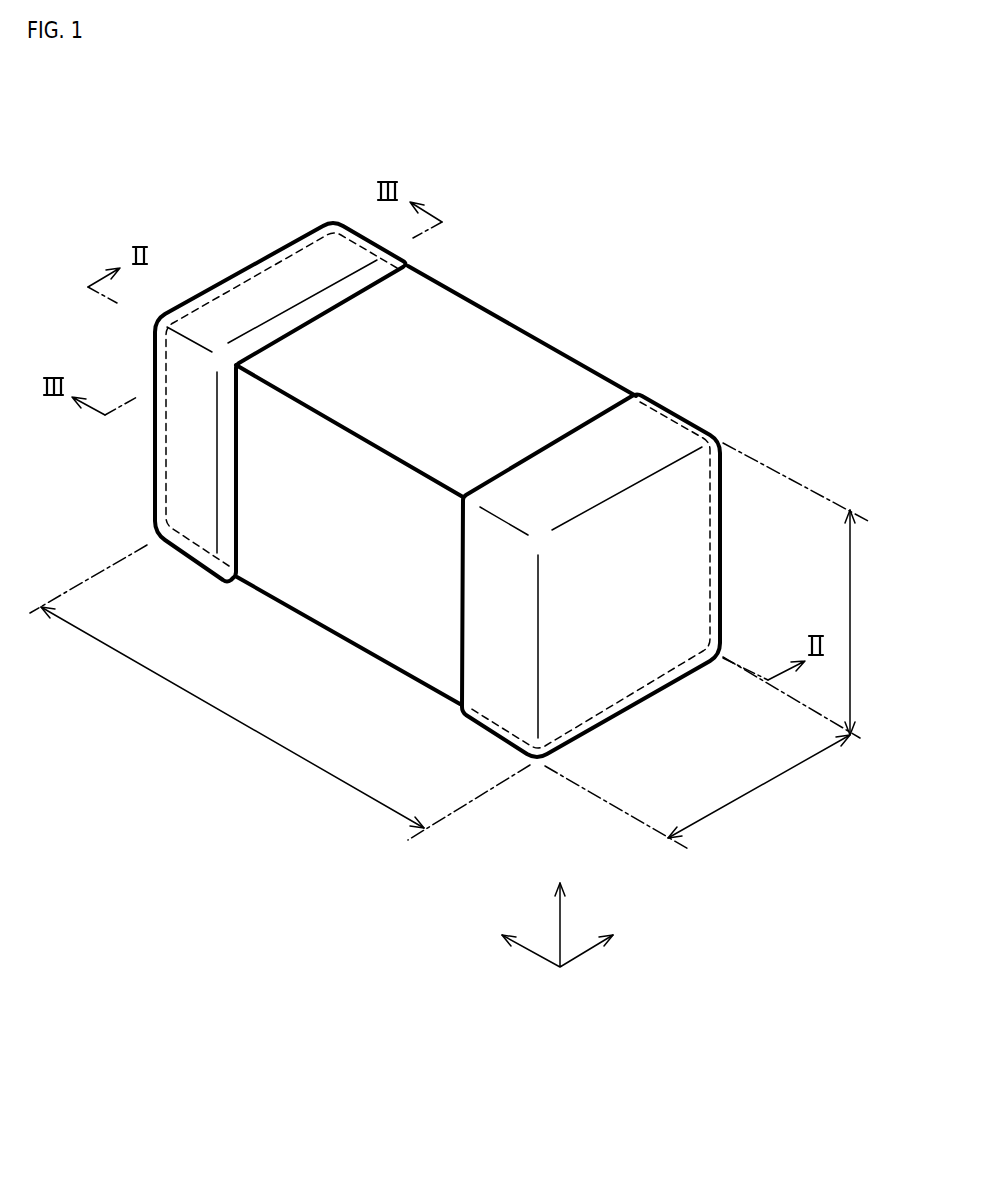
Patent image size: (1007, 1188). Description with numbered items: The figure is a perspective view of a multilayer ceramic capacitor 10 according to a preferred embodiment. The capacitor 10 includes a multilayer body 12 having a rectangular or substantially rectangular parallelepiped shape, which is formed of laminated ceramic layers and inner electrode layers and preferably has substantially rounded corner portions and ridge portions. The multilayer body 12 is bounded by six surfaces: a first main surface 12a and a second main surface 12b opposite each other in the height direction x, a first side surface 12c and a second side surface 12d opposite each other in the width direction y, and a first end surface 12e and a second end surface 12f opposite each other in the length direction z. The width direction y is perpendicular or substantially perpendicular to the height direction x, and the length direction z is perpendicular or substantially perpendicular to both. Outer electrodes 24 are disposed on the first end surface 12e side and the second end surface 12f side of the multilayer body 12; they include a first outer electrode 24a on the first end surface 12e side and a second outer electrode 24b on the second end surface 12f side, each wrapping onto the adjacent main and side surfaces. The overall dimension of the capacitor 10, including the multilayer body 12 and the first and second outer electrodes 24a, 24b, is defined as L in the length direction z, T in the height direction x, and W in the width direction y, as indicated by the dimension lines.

The multilayer ceramic capacitor 10 is at (92, 187).
The multilayer body 12 is at (582, 355).
The first main surface 12a is at (517, 360).
The second main surface 12b is at (315, 603).
The first side surface 12c is at (383, 627).
The second side surface 12d is at (472, 337).
The first end surface 12e is at (265, 282).
The second end surface 12f is at (673, 535).
The outer electrodes 24 is at (273, 888).
The first outer electrode 24a is at (356, 209).
The second outer electrode 24b is at (694, 408).